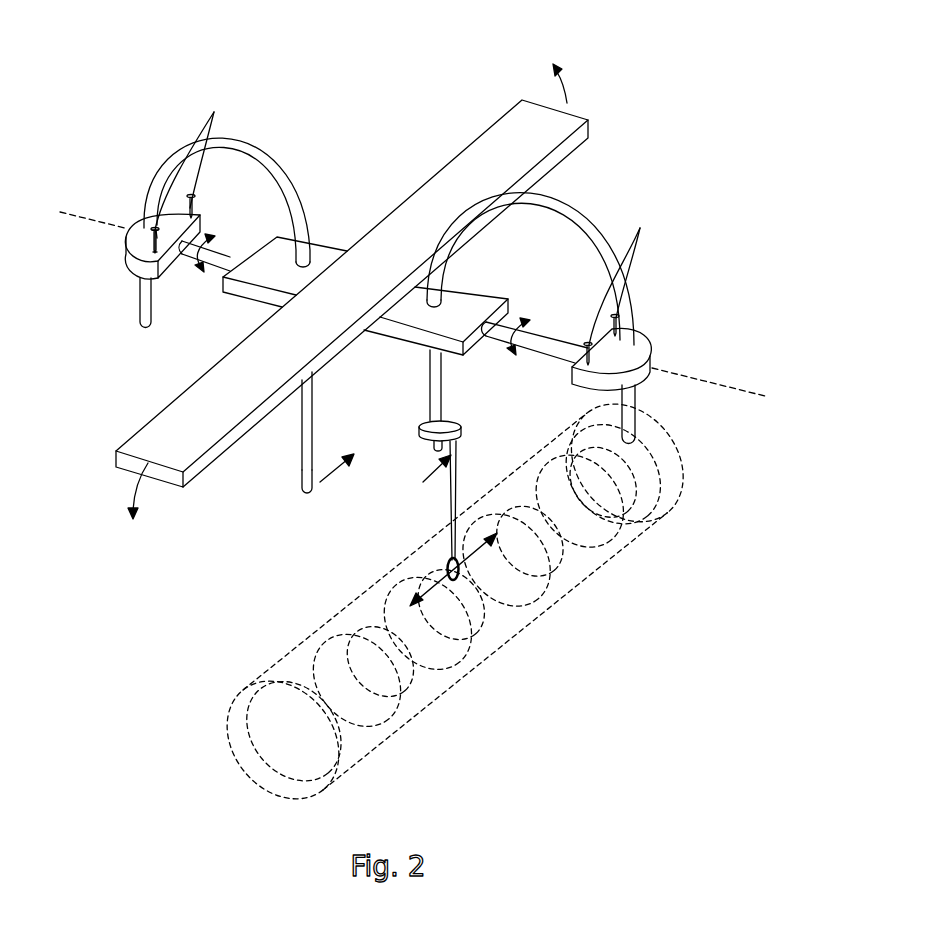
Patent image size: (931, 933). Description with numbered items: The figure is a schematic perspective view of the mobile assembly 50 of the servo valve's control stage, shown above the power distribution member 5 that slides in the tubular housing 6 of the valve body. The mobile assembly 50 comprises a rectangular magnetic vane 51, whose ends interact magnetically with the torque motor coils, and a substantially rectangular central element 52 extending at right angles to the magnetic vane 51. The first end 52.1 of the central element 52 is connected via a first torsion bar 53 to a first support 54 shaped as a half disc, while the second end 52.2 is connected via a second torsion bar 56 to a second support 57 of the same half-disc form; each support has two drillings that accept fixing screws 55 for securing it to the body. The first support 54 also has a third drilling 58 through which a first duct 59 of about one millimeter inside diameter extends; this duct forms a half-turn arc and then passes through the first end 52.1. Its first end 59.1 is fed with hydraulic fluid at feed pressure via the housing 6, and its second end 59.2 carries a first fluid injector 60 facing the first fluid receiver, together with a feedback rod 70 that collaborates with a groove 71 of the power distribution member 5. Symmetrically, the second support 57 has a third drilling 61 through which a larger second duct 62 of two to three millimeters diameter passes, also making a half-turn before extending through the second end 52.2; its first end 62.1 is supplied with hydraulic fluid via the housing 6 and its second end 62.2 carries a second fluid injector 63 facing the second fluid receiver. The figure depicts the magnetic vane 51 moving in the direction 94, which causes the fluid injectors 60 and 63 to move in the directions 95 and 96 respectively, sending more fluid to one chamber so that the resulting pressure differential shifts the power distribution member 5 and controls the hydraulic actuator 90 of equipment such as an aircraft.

The power distribution member 5 is at (623, 533).
The tubular housing 6 is at (279, 668).
The mobile assembly 50 is at (422, 114).
The magnetic vane 51 is at (577, 117).
The central element 52 is at (323, 255).
The first end of the central element 52.1 is at (488, 299).
The second end of the central element 52.2 is at (275, 243).
The first torsion bar 53 is at (557, 337).
The first support 54 is at (576, 382).
The fixing screws 55 is at (402, 226).
The second torsion bar 56 is at (217, 258).
The second support 57 is at (130, 254).
The third drilling 58 is at (633, 337).
The first duct 59 is at (580, 220).
The first end of the first duct 59.1 is at (637, 417).
The second end of the first duct 59.2 is at (438, 390).
The first fluid injector 60 is at (433, 448).
The third drilling 61 is at (143, 217).
The second duct 62 is at (250, 142).
The first end of the second duct 62.1 is at (143, 300).
The second end of the second duct 62.2 is at (298, 475).
The second fluid injector 63 is at (302, 474).
The feedback rod 70 is at (453, 484).
The groove 71 is at (500, 630).
The hydraulic actuator 90 is at (128, 487).
The direction of movement of the blade 94 is at (568, 90).
The direction of movement of the first fluid injector 95 is at (428, 480).
The direction of movement of the second fluid injector 96 is at (327, 484).